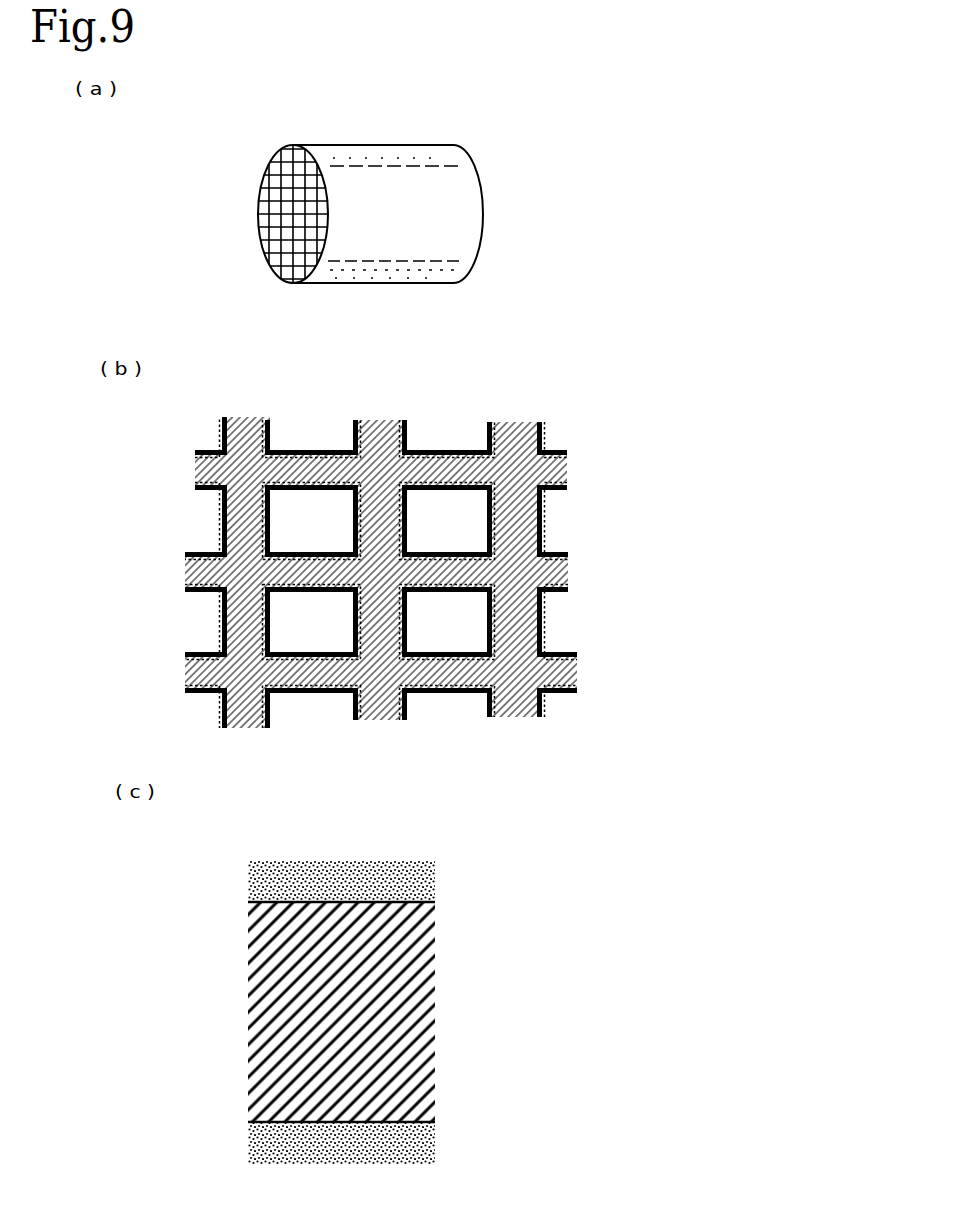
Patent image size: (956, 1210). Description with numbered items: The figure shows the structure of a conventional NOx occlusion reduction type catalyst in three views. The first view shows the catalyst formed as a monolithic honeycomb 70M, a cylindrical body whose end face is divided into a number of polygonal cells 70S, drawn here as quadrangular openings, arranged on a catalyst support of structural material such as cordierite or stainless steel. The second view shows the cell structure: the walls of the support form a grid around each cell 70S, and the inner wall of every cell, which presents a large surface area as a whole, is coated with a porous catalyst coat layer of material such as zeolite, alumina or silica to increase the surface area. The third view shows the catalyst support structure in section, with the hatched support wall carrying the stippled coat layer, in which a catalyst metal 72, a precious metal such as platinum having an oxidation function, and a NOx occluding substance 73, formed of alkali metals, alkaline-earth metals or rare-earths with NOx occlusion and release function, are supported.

The monolithic honeycomb 70M is at (477, 230).
The cell 70S is at (308, 500).
The catalyst metal 72 is at (412, 873).
The NOx occluding substance 73 is at (700, 858).